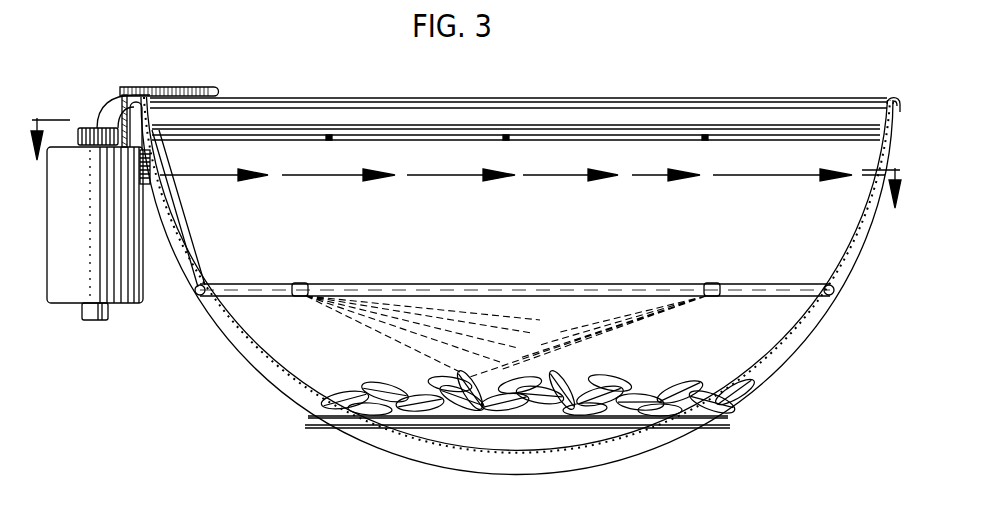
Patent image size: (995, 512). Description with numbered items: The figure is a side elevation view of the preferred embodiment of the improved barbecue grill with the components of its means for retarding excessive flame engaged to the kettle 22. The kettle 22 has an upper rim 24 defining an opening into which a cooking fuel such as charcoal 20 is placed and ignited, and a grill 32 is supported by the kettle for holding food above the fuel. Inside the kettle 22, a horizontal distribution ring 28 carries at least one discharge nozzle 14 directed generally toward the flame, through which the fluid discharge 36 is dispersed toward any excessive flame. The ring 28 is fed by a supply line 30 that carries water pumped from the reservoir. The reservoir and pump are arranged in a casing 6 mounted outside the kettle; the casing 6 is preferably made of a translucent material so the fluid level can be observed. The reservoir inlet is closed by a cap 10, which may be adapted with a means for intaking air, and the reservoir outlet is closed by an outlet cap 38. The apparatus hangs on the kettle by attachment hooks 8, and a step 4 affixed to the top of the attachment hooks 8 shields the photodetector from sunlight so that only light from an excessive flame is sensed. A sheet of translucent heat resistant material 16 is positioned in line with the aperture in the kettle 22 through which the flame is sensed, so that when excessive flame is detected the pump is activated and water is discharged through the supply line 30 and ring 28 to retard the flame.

The step 4 is at (238, 49).
The casing 6 is at (143, 304).
The attachment hooks 8 is at (110, 98).
The cap 10 is at (86, 127).
The discharge nozzle 14 is at (712, 297).
The sheet of translucent heat resistant material 16 is at (150, 166).
The charcoal 20 is at (648, 376).
The kettle 22 is at (763, 414).
The upper rim 24 is at (892, 100).
The horizontal distribution ring 28 is at (262, 284).
The supply line 30 is at (190, 210).
The grill 32 is at (518, 99).
The fluid discharge 36 is at (335, 302).
The outlet cap 38 is at (92, 321).